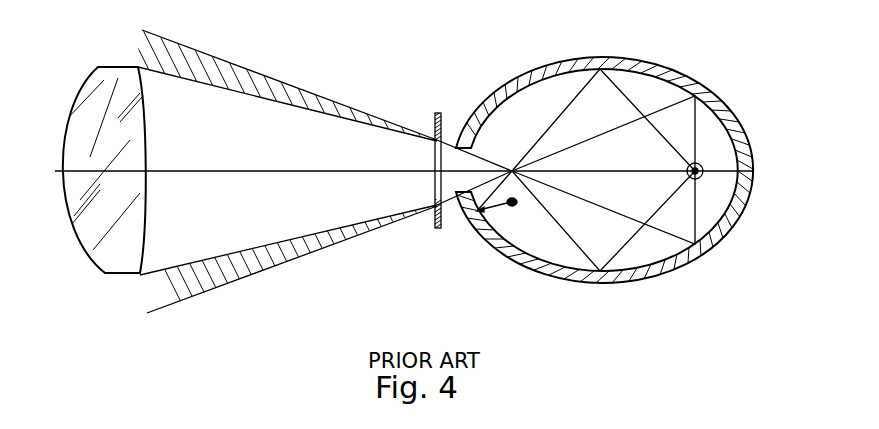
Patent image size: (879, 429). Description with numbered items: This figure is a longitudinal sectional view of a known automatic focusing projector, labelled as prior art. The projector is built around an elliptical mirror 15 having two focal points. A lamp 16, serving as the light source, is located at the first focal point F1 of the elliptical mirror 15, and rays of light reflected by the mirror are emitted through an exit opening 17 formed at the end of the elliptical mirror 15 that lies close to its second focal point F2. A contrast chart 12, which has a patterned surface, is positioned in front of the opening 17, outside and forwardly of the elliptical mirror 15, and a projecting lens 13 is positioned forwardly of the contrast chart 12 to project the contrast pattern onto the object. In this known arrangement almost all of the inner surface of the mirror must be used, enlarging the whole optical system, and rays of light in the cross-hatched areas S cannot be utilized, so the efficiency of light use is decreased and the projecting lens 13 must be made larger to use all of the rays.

The contrast chart 12 is at (436, 113).
The projecting lens 13 is at (125, 82).
The elliptical mirror 15 is at (633, 59).
The lamp 16 is at (703, 160).
The exit opening 17 is at (463, 193).
The cross-hatched areas S is at (267, 76).
The first focal point F1 is at (703, 176).
The second focal point F2 is at (514, 174).